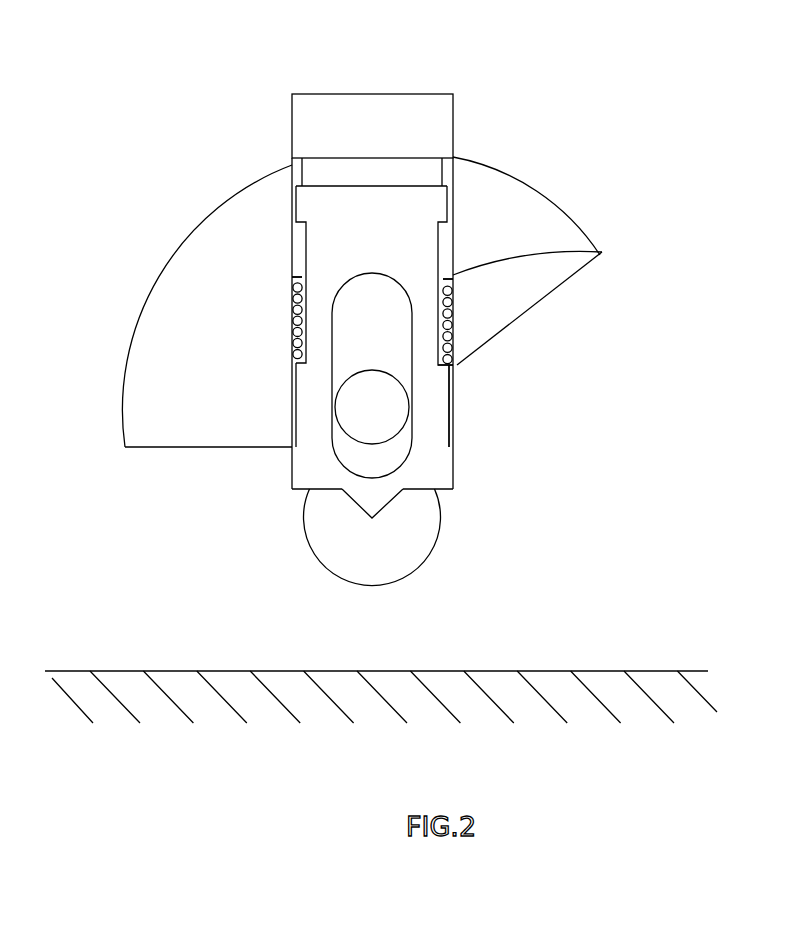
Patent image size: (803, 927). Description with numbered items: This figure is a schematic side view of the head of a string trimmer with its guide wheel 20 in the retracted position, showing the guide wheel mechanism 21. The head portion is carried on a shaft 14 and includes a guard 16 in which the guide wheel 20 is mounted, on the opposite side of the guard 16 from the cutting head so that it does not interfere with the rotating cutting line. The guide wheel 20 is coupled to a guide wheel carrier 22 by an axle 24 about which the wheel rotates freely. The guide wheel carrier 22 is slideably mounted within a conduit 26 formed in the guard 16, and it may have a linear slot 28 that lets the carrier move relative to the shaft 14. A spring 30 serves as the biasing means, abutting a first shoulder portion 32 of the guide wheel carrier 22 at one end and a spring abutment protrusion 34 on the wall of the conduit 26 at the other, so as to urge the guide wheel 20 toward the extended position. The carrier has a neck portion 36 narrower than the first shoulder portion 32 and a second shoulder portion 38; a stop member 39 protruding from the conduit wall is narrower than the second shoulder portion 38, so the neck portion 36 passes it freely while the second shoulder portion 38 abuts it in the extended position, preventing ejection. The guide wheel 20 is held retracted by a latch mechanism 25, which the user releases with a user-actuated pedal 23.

The shaft 14 is at (385, 403).
The guard 16 is at (125, 370).
The guide wheel 20 is at (413, 573).
The guide wheel mechanism 21 is at (248, 402).
The guide wheel carrier 22 is at (292, 462).
The user-actuated pedal 23 is at (312, 93).
The axle 24 is at (453, 445).
The latch mechanism 25 is at (268, 163).
The conduit 26 is at (453, 392).
The linear slot 28 is at (338, 293).
The spring 30 is at (452, 340).
The first shoulder portion 32 is at (457, 374).
The spring abutment protrusion 34 is at (450, 282).
The neck portion 36 is at (453, 252).
The second shoulder portion 38 is at (453, 228).
The stop member 39 is at (587, 264).